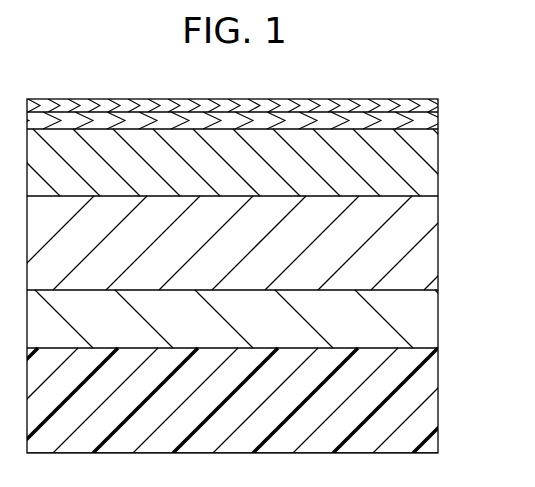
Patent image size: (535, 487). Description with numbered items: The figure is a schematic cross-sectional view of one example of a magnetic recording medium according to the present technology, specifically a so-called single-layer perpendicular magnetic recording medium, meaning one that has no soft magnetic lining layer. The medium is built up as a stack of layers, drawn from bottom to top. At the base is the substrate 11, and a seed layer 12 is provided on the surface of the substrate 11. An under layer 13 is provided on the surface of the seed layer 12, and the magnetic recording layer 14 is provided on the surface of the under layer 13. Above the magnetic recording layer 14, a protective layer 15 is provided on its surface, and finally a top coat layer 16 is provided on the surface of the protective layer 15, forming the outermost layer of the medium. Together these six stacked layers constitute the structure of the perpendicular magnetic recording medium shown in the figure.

The substrate 11 is at (432, 380).
The seed layer 12 is at (432, 317).
The under layer 13 is at (432, 250).
The magnetic recording layer 14 is at (430, 158).
The protective layer 15 is at (432, 120).
The top coat layer 16 is at (432, 106).